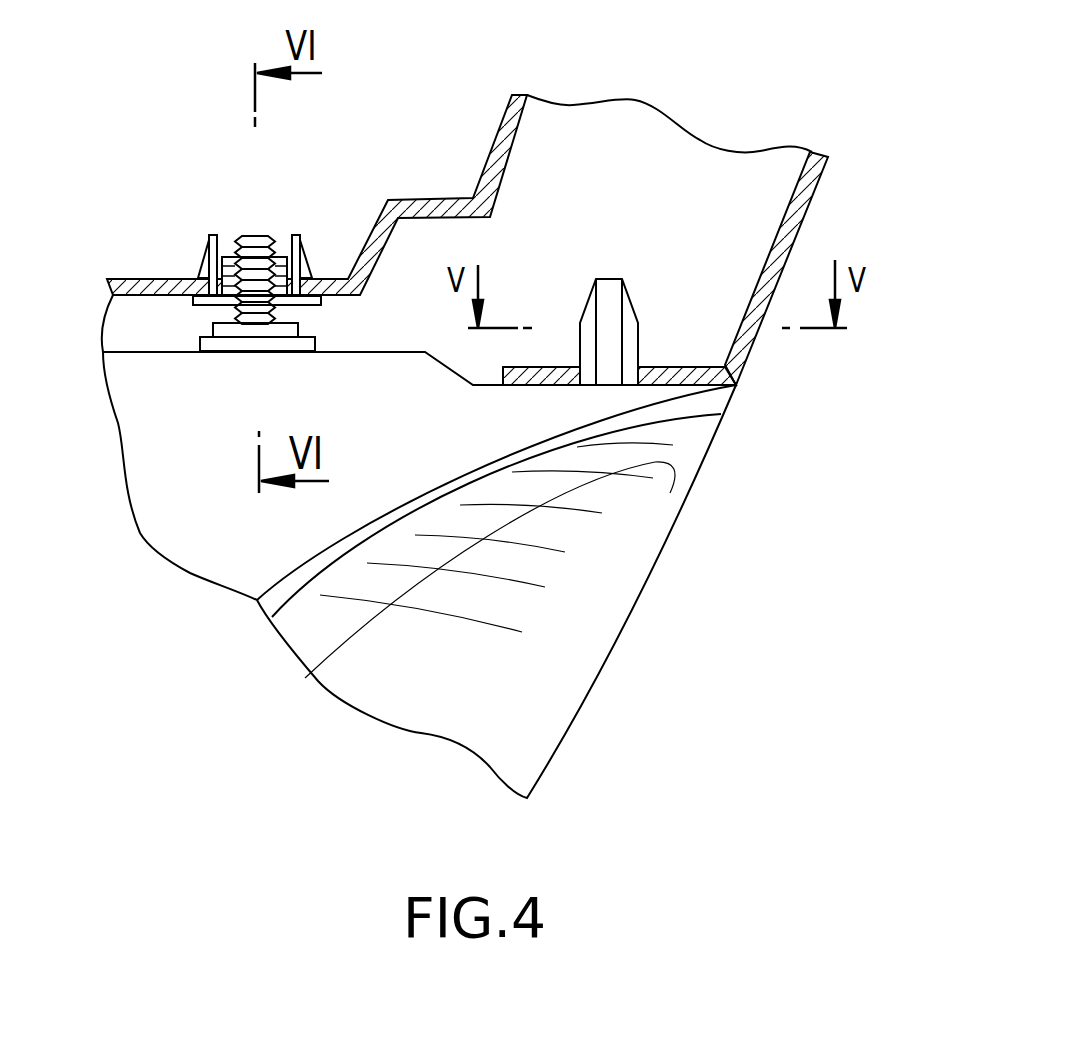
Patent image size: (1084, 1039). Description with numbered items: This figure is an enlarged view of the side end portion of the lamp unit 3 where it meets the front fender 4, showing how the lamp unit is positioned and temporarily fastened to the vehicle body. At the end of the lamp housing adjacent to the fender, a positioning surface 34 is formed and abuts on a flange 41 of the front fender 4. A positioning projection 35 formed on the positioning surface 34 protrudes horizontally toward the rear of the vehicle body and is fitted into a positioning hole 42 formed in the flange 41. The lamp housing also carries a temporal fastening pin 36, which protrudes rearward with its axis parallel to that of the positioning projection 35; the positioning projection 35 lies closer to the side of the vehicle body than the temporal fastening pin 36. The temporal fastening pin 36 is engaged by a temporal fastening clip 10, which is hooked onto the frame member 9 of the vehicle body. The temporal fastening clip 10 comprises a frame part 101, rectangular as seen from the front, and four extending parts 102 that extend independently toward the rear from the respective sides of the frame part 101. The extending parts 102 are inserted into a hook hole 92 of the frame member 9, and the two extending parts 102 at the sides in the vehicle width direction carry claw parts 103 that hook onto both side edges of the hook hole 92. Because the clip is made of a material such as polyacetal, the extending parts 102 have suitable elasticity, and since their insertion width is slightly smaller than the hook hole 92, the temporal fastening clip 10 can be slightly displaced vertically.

The lamp unit 3 is at (612, 682).
The front fender 4 is at (816, 187).
The frame member 9 is at (513, 141).
The temporal fastening clip 10 is at (188, 328).
The positioning surface 34 is at (677, 367).
The positioning projection 35 is at (602, 277).
The temporal fastening pin 36 is at (252, 236).
The flange 41 is at (517, 387).
The positioning hole 42 is at (565, 367).
The hook hole 92 is at (200, 290).
The frame part 101 is at (222, 308).
The extending parts 102 is at (213, 232).
The claw parts 103 is at (202, 262).